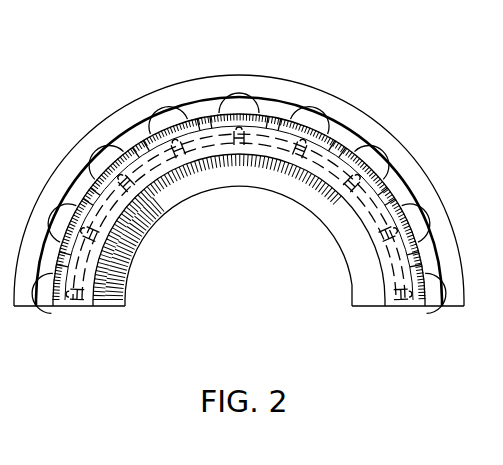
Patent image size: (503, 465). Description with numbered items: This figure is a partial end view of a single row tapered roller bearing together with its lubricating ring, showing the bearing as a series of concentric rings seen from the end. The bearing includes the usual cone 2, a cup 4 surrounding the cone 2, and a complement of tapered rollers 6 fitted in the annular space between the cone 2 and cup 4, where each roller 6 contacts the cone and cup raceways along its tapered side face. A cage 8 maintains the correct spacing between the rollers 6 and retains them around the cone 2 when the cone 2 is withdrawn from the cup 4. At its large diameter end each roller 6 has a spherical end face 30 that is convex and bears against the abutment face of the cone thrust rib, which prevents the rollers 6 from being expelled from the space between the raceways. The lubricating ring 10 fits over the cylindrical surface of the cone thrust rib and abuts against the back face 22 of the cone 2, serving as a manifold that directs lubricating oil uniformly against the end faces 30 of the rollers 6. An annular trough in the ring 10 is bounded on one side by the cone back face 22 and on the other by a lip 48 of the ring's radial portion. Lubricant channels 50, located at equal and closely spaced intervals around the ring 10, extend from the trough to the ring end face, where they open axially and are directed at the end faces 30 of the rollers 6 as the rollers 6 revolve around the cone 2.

The cone 2 is at (335, 243).
The cup 4 is at (380, 121).
The tapered rollers 6 is at (315, 112).
The cage 8 is at (132, 140).
The lubricating ring 10 is at (203, 119).
The back face 22 is at (117, 279).
The spherical end face 30 is at (155, 112).
The lip 48 is at (384, 266).
The lubricant channels 50 is at (240, 142).